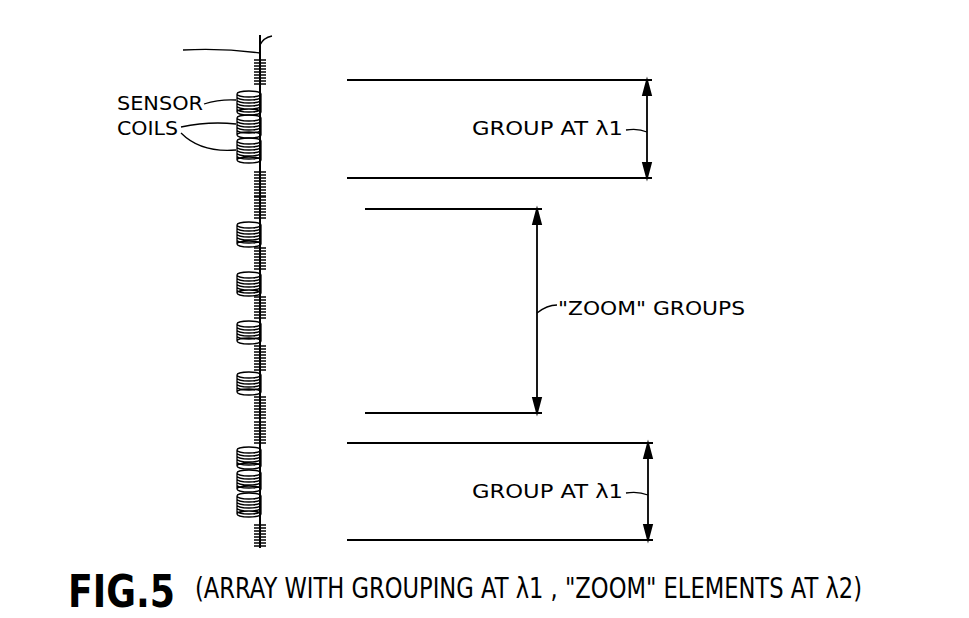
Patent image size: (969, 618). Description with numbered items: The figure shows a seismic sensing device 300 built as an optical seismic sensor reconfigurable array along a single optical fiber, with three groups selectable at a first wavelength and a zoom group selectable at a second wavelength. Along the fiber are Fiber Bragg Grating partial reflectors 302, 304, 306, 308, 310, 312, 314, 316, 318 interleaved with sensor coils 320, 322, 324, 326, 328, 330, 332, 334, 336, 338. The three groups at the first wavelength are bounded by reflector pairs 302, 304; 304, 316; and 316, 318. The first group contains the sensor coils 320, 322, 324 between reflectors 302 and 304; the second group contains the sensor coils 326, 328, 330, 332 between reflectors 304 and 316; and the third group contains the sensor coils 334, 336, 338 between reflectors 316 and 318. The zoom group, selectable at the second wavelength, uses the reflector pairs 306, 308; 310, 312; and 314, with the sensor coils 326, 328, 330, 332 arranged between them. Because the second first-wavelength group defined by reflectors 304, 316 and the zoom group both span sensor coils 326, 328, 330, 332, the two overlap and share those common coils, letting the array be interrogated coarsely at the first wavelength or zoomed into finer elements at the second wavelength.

The seismic sensing device 300 is at (92, 163).
The Fiber Bragg Grating partial reflector 302 is at (255, 76).
The Fiber Bragg Grating partial reflector 304 is at (255, 186).
The Fiber Bragg Grating partial reflector 306 is at (255, 212).
The Fiber Bragg Grating partial reflector 308 is at (255, 262).
The Fiber Bragg Grating partial reflector 310 is at (255, 312).
The Fiber Bragg Grating partial reflector 312 is at (255, 361).
The Fiber Bragg Grating partial reflector 314 is at (255, 411).
The Fiber Bragg Grating partial reflector 316 is at (255, 436).
The Fiber Bragg Grating partial reflector 318 is at (255, 539).
The sensor coil 320 is at (262, 99).
The sensor coil 322 is at (262, 124).
The sensor coil 324 is at (262, 148).
The sensor coil 326 is at (262, 233).
The sensor coil 328 is at (262, 282).
The sensor coil 330 is at (262, 331).
The sensor coil 332 is at (262, 381).
The sensor coil 334 is at (262, 456).
The sensor coil 336 is at (262, 480).
The sensor coil 338 is at (262, 504).